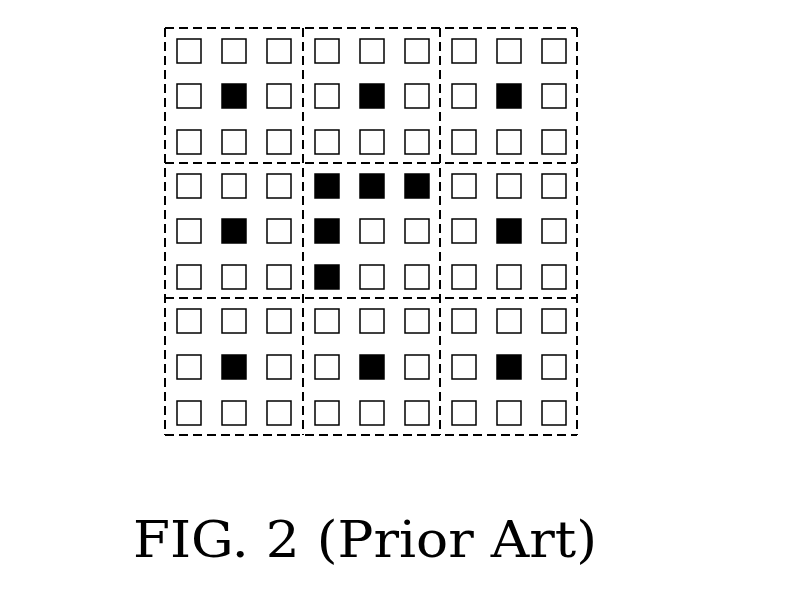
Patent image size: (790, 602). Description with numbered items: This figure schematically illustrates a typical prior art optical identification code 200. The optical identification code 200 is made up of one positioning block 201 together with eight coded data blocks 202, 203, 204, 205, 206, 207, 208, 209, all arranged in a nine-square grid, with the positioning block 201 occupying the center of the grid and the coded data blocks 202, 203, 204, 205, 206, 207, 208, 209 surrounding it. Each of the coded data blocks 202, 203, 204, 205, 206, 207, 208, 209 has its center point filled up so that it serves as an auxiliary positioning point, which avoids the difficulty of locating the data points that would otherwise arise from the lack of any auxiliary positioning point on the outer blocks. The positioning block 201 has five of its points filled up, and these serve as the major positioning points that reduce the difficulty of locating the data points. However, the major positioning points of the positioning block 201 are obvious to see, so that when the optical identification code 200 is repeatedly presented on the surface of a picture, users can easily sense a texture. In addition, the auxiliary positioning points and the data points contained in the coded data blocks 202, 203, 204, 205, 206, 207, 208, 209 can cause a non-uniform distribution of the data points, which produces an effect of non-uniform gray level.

The optical identification code 200 is at (88, 76).
The positioning block 201 is at (415, 252).
The coded data block 202 is at (393, 38).
The coded data block 203 is at (567, 75).
The coded data block 204 is at (567, 213).
The coded data block 205 is at (565, 392).
The coded data block 206 is at (348, 423).
The coded data block 207 is at (175, 390).
The coded data block 208 is at (175, 252).
The coded data block 209 is at (177, 117).